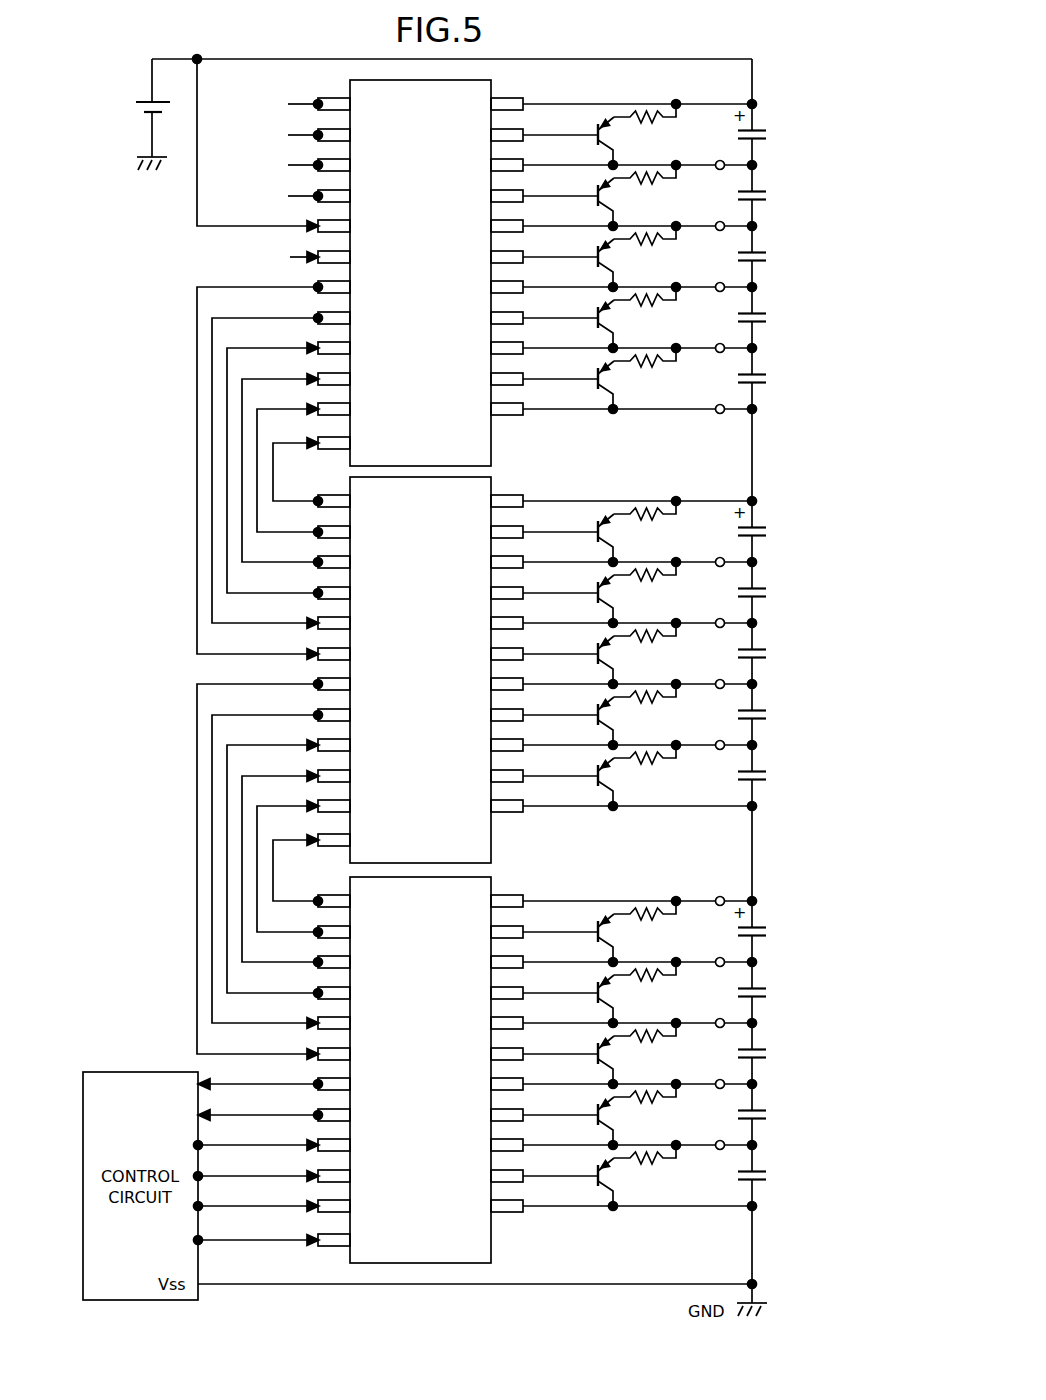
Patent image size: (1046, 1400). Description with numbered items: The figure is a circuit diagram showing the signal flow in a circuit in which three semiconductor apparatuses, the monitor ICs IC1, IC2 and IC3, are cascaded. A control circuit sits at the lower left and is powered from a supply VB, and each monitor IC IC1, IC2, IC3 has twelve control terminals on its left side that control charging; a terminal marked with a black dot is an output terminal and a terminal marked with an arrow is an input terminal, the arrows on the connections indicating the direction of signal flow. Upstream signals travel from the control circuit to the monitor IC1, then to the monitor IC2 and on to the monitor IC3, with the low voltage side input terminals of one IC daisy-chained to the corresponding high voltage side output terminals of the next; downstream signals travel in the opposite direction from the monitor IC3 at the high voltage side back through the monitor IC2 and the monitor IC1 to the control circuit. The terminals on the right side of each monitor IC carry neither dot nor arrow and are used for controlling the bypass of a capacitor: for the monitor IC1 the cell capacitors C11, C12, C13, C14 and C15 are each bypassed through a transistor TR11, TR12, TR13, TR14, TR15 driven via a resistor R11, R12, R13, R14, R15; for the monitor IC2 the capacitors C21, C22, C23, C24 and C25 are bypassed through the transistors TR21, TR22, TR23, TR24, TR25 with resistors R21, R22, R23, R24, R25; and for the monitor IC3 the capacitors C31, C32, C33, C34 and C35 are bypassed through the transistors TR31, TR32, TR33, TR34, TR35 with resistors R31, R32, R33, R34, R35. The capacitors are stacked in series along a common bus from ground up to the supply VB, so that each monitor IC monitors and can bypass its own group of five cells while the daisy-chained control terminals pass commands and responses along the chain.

The battery VB is at (143, 114).
The monitor IC IC1 is at (420, 1070).
The monitor IC IC2 is at (420, 670).
The monitor IC IC3 is at (420, 273).
The transistor TR11 is at (570, 937).
The transistor TR12 is at (570, 998).
The transistor TR13 is at (570, 1059).
The transistor TR14 is at (570, 1120).
The transistor TR15 is at (570, 1181).
The transistor TR21 is at (570, 537).
The transistor TR22 is at (570, 598).
The transistor TR23 is at (570, 659).
The transistor TR24 is at (570, 720).
The transistor TR25 is at (570, 781).
The transistor TR31 is at (570, 140).
The transistor TR32 is at (570, 201).
The transistor TR33 is at (570, 262).
The transistor TR34 is at (570, 323).
The transistor TR35 is at (570, 384).
The resistor R11 is at (647, 921).
The resistor R12 is at (647, 982).
The resistor R13 is at (647, 1043).
The resistor R14 is at (647, 1104).
The resistor R15 is at (647, 1165).
The resistor R21 is at (647, 521).
The resistor R22 is at (647, 582).
The resistor R23 is at (647, 643).
The resistor R24 is at (647, 704).
The resistor R25 is at (647, 765).
The resistor R31 is at (647, 124).
The resistor R32 is at (647, 185).
The resistor R33 is at (647, 246).
The resistor R34 is at (647, 307).
The resistor R35 is at (647, 368).
The battery cell C11 is at (771, 931).
The battery cell C12 is at (771, 992).
The battery cell C13 is at (771, 1053).
The battery cell C14 is at (771, 1114).
The battery cell C15 is at (771, 1175).
The battery cell C21 is at (771, 531).
The battery cell C22 is at (771, 592).
The battery cell C23 is at (771, 653).
The battery cell C24 is at (771, 714).
The battery cell C25 is at (771, 775).
The battery cell C31 is at (771, 134).
The battery cell C32 is at (771, 195).
The battery cell C33 is at (771, 256).
The battery cell C34 is at (771, 317).
The battery cell C35 is at (771, 378).